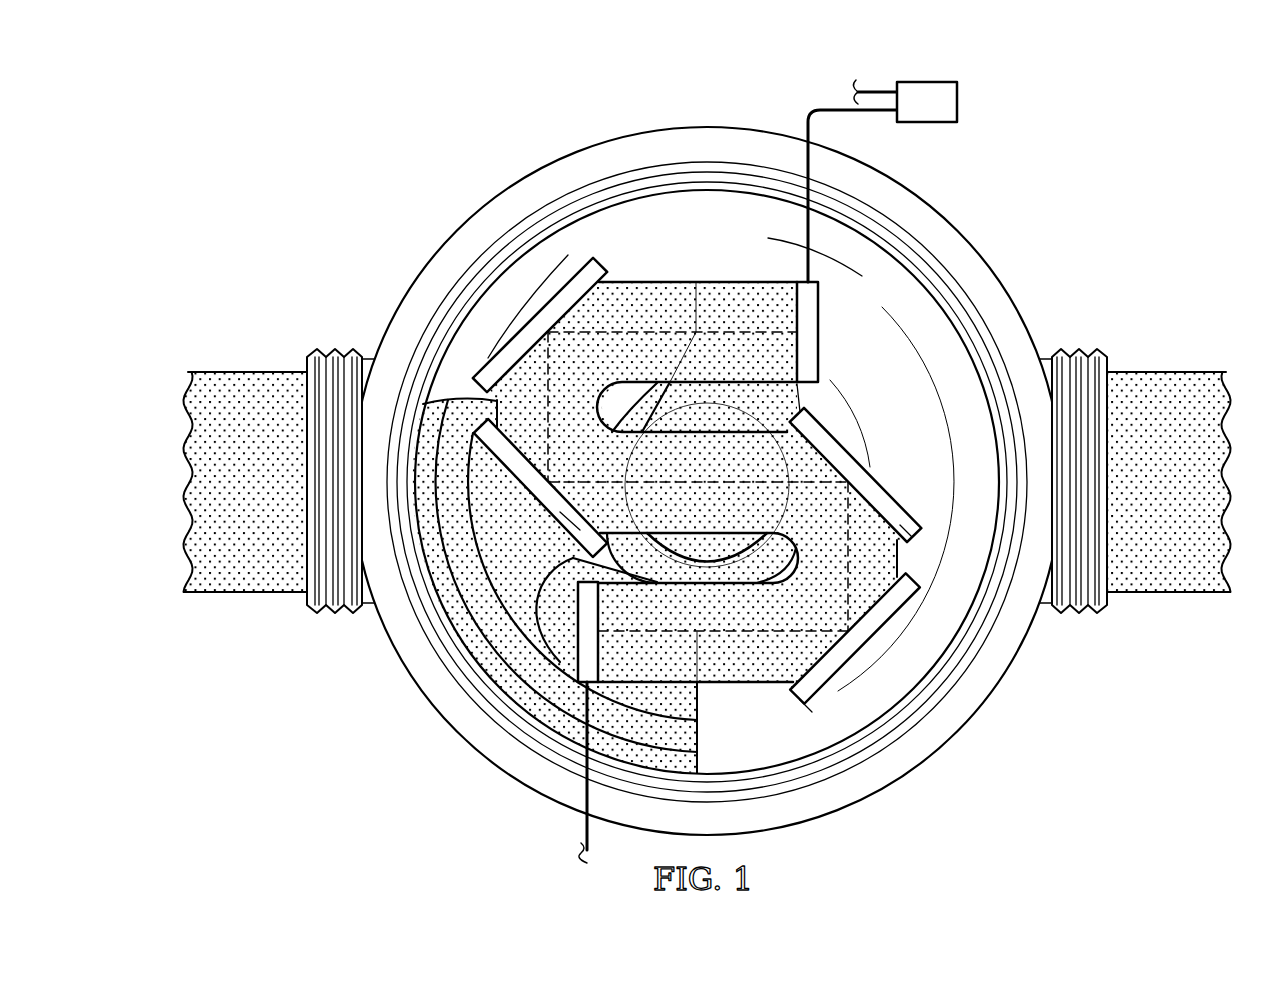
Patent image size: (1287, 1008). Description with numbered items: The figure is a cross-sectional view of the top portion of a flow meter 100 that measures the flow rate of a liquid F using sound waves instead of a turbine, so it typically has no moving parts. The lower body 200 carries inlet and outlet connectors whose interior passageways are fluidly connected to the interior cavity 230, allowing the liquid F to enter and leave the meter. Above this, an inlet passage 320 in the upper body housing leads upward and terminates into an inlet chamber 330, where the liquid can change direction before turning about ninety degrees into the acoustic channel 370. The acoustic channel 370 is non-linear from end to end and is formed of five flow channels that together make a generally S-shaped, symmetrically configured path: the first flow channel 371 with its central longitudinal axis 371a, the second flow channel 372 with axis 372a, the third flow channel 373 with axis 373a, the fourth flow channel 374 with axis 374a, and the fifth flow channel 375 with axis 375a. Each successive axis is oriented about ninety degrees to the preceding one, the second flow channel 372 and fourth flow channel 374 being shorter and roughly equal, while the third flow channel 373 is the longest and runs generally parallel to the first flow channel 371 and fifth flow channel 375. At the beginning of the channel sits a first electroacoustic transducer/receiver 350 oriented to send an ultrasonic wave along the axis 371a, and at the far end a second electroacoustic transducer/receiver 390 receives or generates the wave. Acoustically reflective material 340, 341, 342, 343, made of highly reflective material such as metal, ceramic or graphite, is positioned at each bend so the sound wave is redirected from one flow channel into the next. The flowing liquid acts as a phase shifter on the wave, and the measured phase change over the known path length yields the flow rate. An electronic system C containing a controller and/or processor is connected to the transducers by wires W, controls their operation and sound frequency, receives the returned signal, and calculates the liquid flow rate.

The flow meter 100 is at (1062, 176).
The lower body 200 is at (980, 246).
The interior cavity 230 is at (875, 252).
The inlet passage 320 is at (500, 660).
The inlet chamber 330 is at (563, 672).
The acoustically reflective material 340 is at (857, 637).
The acoustically reflective material 341 is at (910, 512).
The acoustically reflective material 342 is at (573, 517).
The acoustically reflective material 343 is at (537, 327).
The first electroacoustic transducer/receiver 350 is at (593, 650).
The acoustic channel 370 is at (626, 278).
The first flow channel 371 is at (758, 680).
The central longitudinal axis 371a is at (712, 636).
The second flow channel 372 is at (890, 562).
The central longitudinal axis 372a is at (848, 497).
The third flow channel 373 is at (803, 410).
The central longitudinal axis 373a is at (657, 485).
The fourth flow channel 374 is at (480, 403).
The central longitudinal axis 374a is at (550, 370).
The fifth flow channel 375 is at (670, 283).
The central longitudinal axis 375a is at (708, 332).
The second electroacoustic transducer/receiver 390 is at (820, 302).
The wire W is at (838, 108).
The liquid F is at (245, 368).
The electronic system C is at (927, 102).